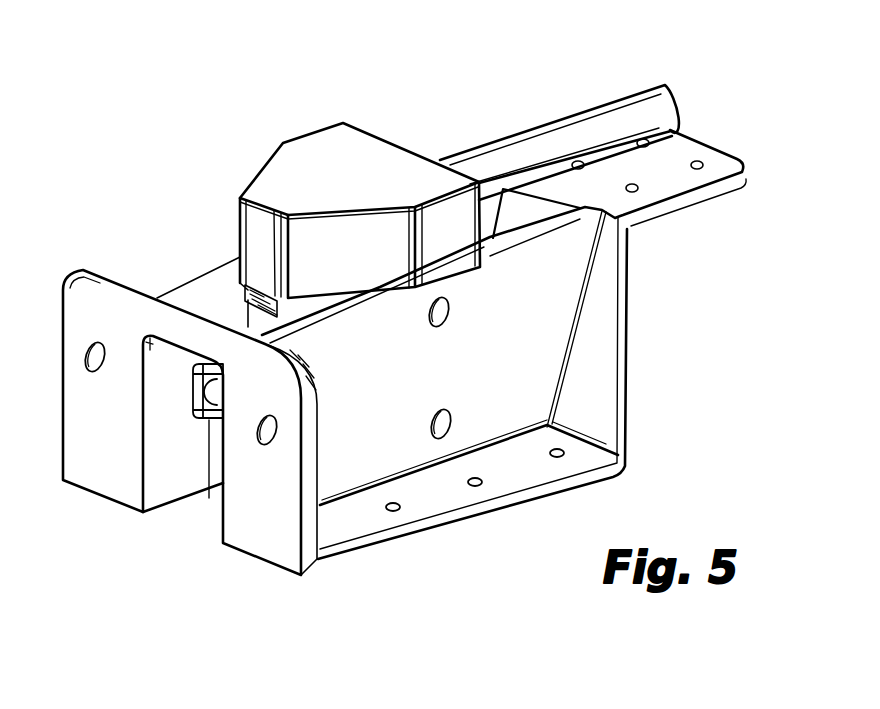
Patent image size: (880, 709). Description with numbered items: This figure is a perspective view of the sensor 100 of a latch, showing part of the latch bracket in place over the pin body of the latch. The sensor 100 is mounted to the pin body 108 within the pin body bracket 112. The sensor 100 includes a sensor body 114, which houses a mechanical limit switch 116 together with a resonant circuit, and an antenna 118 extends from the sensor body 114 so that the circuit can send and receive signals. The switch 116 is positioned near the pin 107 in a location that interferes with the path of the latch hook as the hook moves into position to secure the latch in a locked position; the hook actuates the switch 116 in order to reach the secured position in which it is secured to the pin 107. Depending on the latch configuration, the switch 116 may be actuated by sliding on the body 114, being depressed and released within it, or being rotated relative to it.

The sensor 100 is at (444, 348).
The pin 107 is at (209, 420).
The pin body 108 is at (195, 393).
The pin body bracket 112 is at (335, 561).
The sensor body 114 is at (375, 163).
The mechanical limit switch 116 is at (243, 307).
The antenna 118 is at (637, 107).